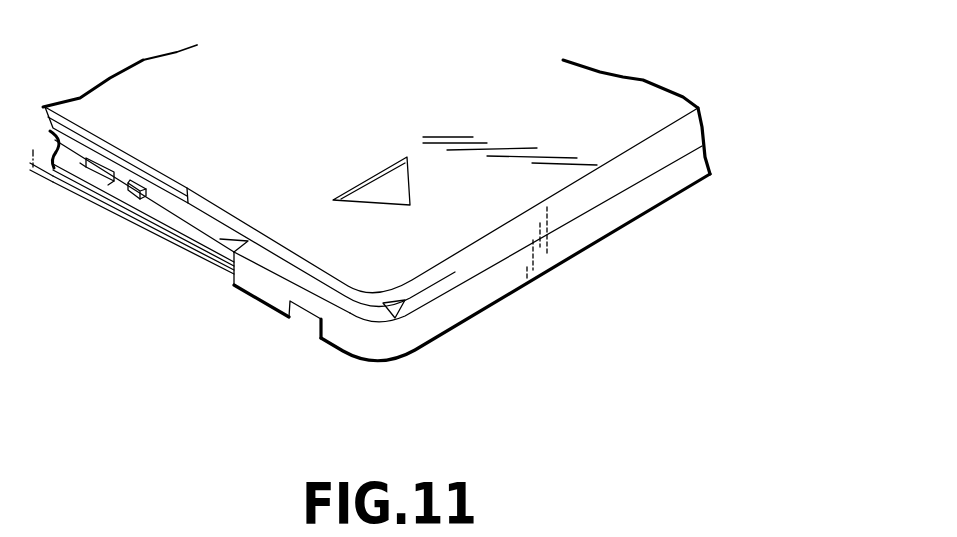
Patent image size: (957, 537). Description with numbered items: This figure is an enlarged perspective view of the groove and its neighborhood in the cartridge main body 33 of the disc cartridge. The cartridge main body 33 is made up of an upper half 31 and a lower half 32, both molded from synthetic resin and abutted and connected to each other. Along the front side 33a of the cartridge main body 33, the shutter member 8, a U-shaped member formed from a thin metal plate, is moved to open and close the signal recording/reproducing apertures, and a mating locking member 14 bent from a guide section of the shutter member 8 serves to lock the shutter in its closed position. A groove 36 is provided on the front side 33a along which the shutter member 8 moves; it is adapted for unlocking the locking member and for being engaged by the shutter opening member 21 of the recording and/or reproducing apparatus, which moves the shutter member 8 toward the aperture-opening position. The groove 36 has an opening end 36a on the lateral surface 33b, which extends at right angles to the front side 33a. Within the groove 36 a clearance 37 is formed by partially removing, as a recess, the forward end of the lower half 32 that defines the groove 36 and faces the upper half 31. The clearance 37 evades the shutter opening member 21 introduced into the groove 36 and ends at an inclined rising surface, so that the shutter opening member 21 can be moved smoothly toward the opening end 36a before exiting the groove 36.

The shutter member 8 is at (92, 204).
The mating locking member 14 is at (96, 166).
The shutter opening member 21 is at (178, 170).
The upper half 31 is at (688, 130).
The lower half 32 is at (695, 163).
The cartridge main body 33 is at (787, 73).
The front side 33a is at (263, 287).
The lateral surface 33b is at (563, 237).
The groove 36 is at (58, 178).
The opening end 36a is at (395, 305).
The clearance 37 is at (157, 204).